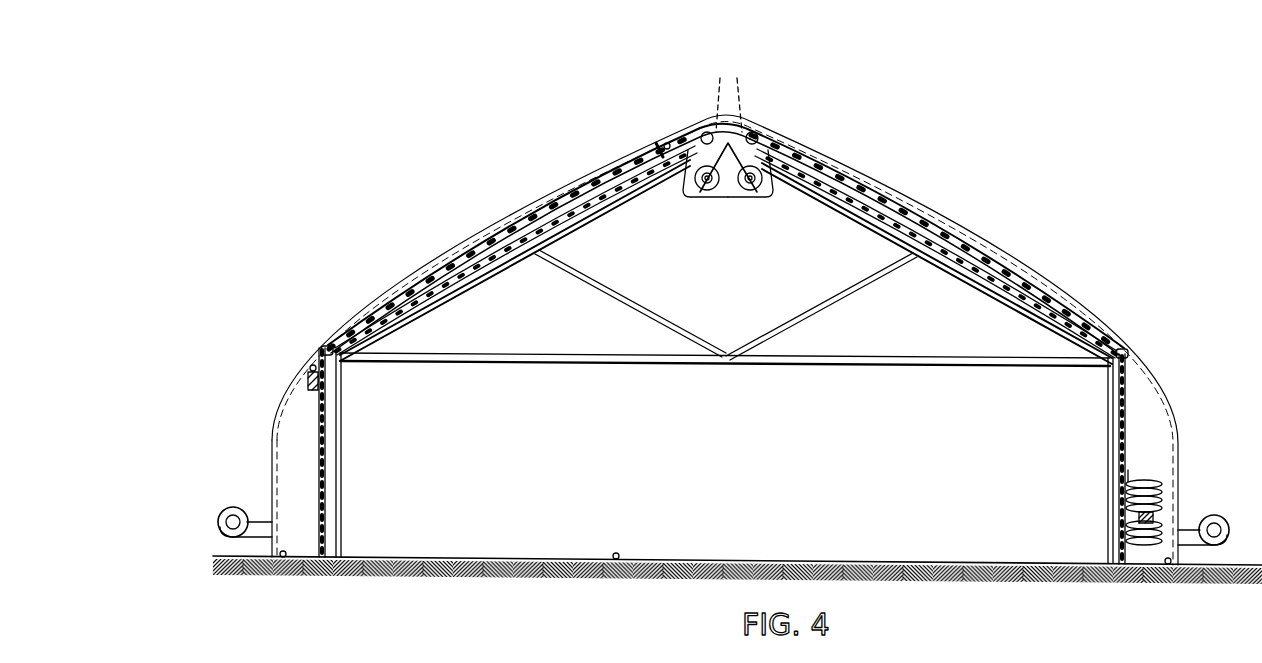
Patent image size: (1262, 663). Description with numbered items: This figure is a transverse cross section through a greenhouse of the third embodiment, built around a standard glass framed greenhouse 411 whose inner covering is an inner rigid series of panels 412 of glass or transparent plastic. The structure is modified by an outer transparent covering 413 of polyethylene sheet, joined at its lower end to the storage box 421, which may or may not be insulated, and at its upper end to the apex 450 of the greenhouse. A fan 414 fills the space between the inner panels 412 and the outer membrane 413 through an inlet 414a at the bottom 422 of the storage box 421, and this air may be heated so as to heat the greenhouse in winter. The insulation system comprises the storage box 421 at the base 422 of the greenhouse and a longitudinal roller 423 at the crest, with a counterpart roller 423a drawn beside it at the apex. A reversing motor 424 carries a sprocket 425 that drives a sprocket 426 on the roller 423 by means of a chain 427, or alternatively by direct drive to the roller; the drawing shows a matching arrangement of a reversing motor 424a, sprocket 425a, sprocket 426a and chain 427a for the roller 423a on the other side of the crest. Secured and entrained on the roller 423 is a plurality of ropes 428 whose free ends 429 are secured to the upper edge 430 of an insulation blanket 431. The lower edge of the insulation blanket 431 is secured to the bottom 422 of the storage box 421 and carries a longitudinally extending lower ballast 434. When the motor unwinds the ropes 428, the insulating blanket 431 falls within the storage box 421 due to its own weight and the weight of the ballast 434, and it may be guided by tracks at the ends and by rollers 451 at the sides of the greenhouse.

The standard glass framed greenhouse 411 is at (467, 290).
The inner rigid series of panels 412 is at (487, 275).
The outer transparent covering 413 is at (513, 219).
The fan 414 is at (226, 510).
The inlet 414a is at (265, 538).
The storage box 421 is at (272, 462).
The bottom of the storage box 422 is at (283, 560).
The longitudinal roller 423 is at (708, 130).
The longitudinal roller 423a is at (751, 130).
The reversing motor 424 is at (708, 192).
The reversing motor 424a is at (748, 192).
The sprocket 425 is at (705, 195).
The sprocket 425a is at (743, 196).
The sprocket 426 is at (719, 88).
The sprocket 426a is at (737, 88).
The chain 427 is at (690, 185).
The chain 427a is at (748, 186).
The ropes 428 is at (683, 135).
The free ends of the ropes 429 is at (662, 143).
The upper edge of the insulation blanket 430 is at (657, 149).
The insulation blanket 431 is at (583, 197).
The lower ballast 434 is at (318, 373).
The apex of the greenhouse 450 is at (727, 140).
The rollers 451 is at (1123, 358).